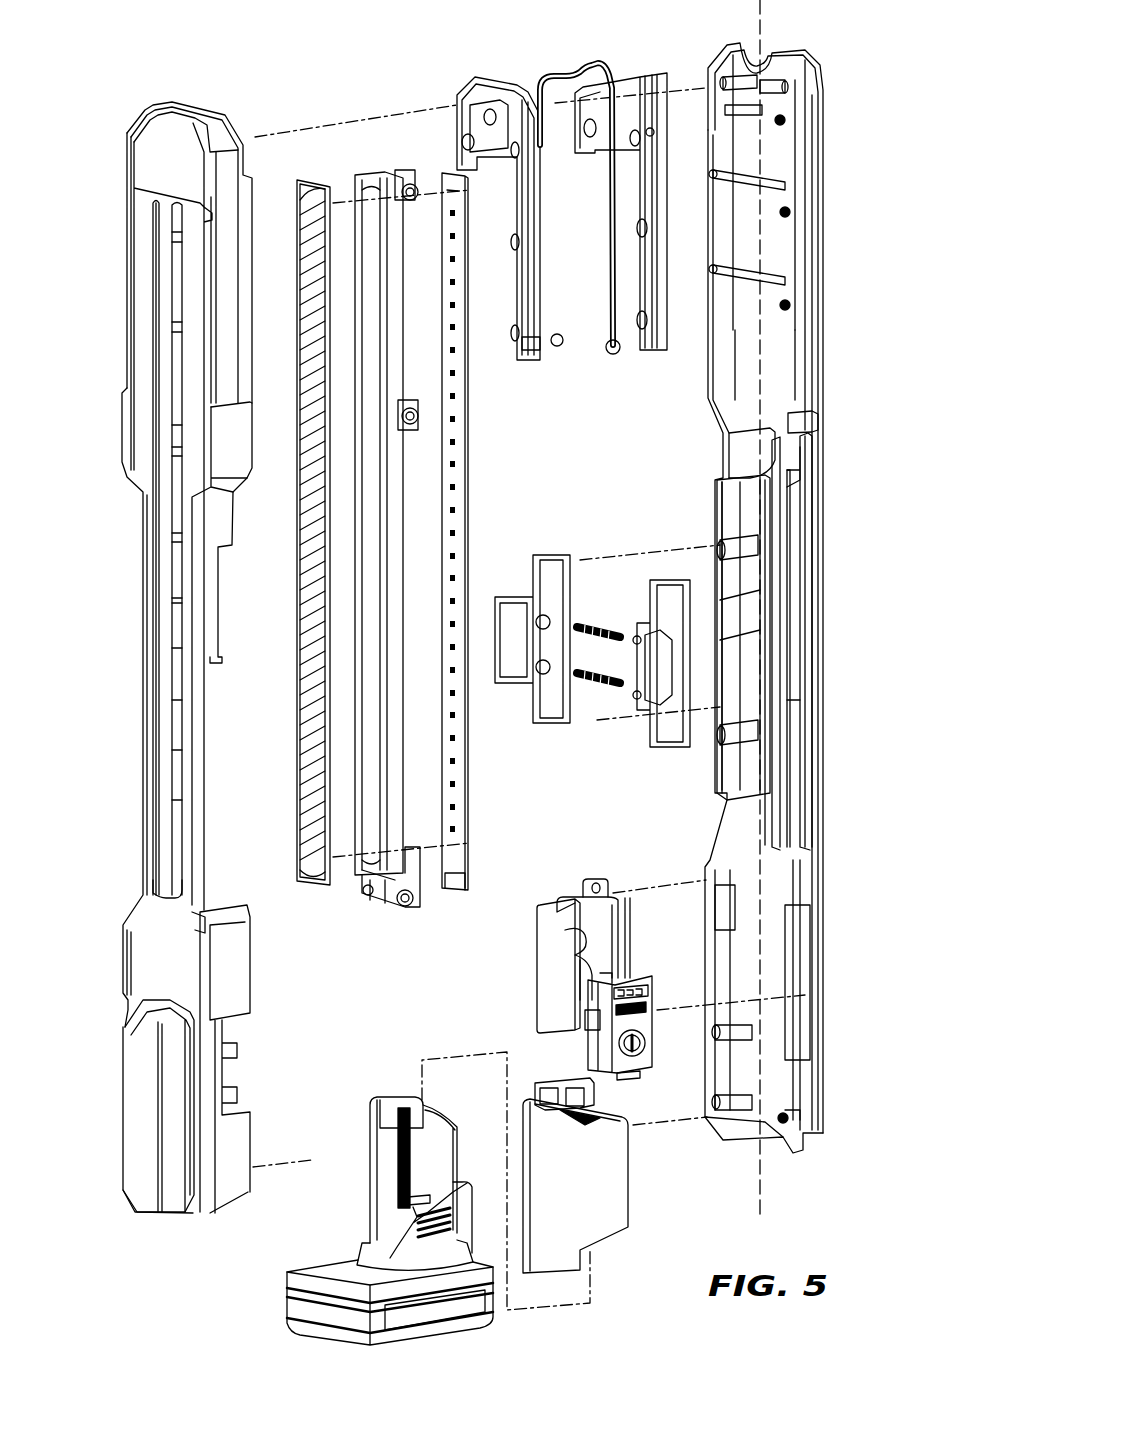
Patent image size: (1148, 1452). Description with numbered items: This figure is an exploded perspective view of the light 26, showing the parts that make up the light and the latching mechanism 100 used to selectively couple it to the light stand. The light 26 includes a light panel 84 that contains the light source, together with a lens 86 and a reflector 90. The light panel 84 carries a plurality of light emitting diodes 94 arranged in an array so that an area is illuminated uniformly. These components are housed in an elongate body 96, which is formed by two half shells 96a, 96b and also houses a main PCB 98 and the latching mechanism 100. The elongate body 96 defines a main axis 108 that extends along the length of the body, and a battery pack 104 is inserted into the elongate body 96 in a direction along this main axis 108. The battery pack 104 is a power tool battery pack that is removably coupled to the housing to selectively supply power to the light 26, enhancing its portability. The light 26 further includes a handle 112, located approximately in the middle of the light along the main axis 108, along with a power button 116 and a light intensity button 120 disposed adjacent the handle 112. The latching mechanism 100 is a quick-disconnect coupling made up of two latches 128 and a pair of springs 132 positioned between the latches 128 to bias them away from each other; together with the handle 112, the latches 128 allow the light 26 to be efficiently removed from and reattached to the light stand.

The light 26 is at (499, 628).
The light panel 84 is at (457, 868).
The lens 86 is at (310, 888).
The reflector 90 is at (358, 878).
The light emitting diodes (LEDs) 94 is at (458, 451).
The elongate body 96 is at (499, 628).
The half shell 96a is at (810, 237).
The half shell 96b is at (132, 352).
The main PCB 98 is at (548, 988).
The latching mechanism 100 is at (710, 636).
The battery pack 104 is at (335, 1270).
The main axis 108 is at (768, 38).
The handle 112 is at (797, 773).
The power button 116 is at (647, 1048).
The light intensity button 120 is at (652, 990).
The latches 128 is at (566, 556).
The springs 132 is at (608, 643).